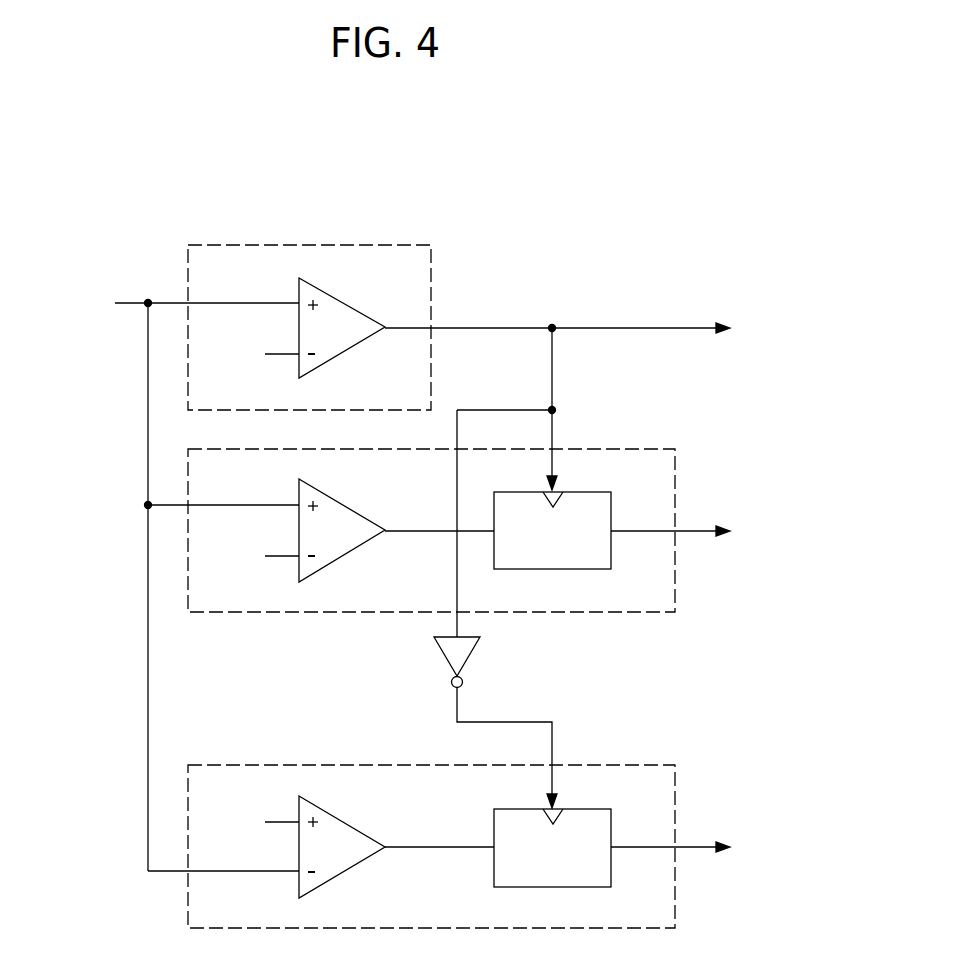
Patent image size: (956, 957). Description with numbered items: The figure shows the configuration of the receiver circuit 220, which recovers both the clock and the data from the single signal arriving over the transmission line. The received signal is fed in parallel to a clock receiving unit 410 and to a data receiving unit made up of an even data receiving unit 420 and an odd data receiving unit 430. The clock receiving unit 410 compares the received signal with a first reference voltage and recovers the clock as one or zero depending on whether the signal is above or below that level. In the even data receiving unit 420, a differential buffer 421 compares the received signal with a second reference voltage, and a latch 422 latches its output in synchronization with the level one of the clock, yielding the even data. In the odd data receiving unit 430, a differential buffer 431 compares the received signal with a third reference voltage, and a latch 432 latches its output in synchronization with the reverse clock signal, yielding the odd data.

The receiver circuit 220 is at (691, 222).
The clock receiving unit 410 is at (375, 245).
The even data receiving unit 420 is at (613, 448).
The differential buffer 421 is at (342, 502).
The latch 422 is at (578, 492).
The odd data receiving unit 430 is at (615, 764).
The differential buffer 431 is at (342, 819).
The latch 432 is at (580, 809).